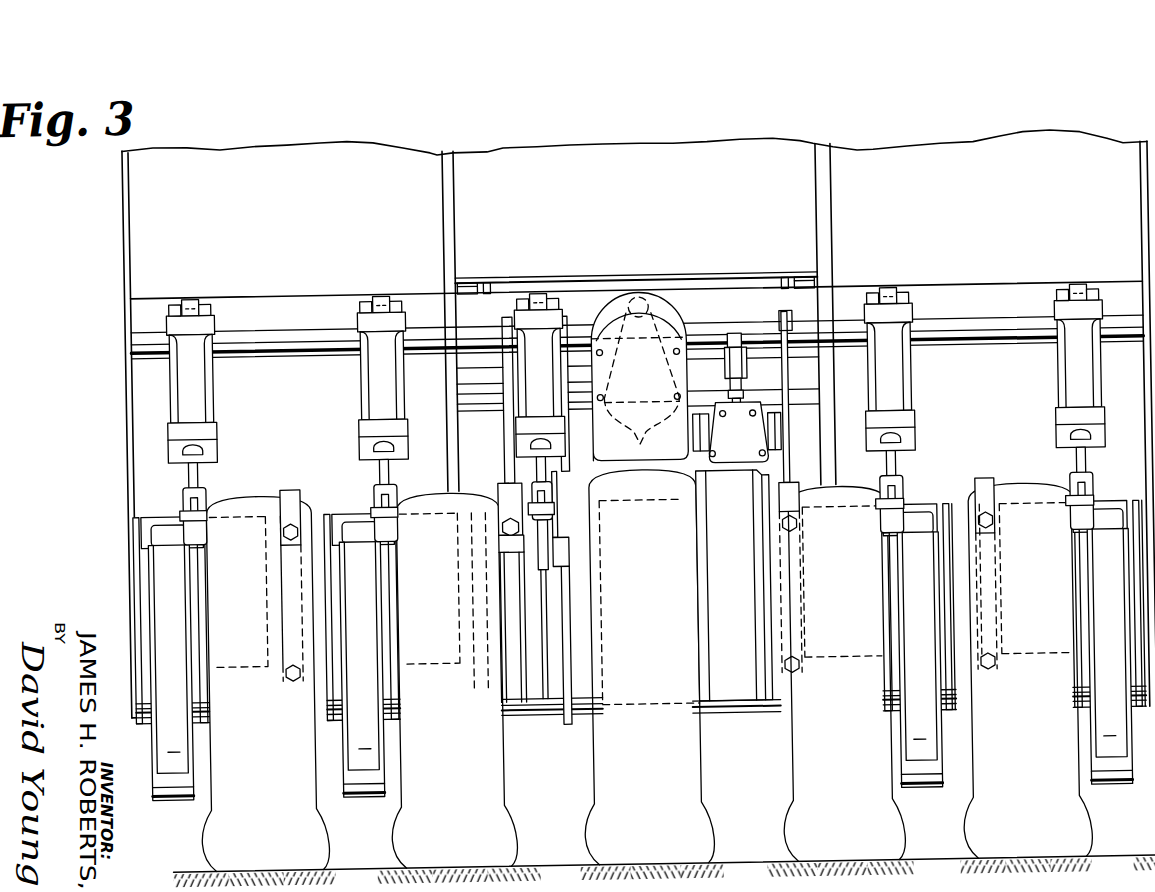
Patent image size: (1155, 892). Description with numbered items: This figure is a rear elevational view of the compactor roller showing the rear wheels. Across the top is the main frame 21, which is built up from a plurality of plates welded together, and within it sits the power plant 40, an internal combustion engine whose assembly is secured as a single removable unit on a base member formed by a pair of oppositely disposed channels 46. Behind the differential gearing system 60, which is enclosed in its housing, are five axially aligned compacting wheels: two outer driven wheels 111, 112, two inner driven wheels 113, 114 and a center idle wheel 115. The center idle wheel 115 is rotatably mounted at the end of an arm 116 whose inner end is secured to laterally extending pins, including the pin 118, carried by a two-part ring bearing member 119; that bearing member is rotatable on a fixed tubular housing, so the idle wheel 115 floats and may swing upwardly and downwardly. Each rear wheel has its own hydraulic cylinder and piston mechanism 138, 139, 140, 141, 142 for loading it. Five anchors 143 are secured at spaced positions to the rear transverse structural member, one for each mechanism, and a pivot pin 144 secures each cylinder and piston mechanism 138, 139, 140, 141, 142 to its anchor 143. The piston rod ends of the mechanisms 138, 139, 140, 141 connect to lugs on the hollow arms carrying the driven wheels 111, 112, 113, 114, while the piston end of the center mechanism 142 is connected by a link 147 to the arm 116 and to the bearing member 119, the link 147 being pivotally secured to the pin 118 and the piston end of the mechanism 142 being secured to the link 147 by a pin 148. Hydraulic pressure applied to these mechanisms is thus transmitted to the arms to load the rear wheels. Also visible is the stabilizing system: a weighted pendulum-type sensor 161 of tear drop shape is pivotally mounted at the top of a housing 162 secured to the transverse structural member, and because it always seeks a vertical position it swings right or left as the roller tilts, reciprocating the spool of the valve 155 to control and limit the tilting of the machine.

The main frame 21 is at (120, 218).
The power plant 40 is at (661, 190).
The channels 46 is at (477, 279).
The differential gearing system 60 is at (733, 692).
The outer driven wheel 111 is at (300, 852).
The outer driven wheel 112 is at (1054, 850).
The inner driven wheel 113 is at (499, 855).
The inner driven wheel 114 is at (874, 849).
The center idle wheel 115 is at (685, 851).
The arm 116 is at (565, 639).
The pin 118 is at (556, 550).
The two-part ring bearing member 119 is at (530, 691).
The hydraulic cylinder and piston mechanism 138 is at (196, 383).
The hydraulic cylinder and piston mechanism 139 is at (1083, 381).
The hydraulic cylinder and piston mechanism 140 is at (383, 384).
The hydraulic cylinder and piston mechanism 141 is at (896, 382).
The hydraulic cylinder and piston mechanism 142 is at (546, 345).
The anchor 143 is at (193, 293).
The pivot pin 144 is at (212, 300).
The link 147 is at (546, 525).
The pin 148 is at (556, 506).
The valve 155 is at (752, 442).
The sensor 161 is at (662, 420).
The housing 162 is at (674, 312).